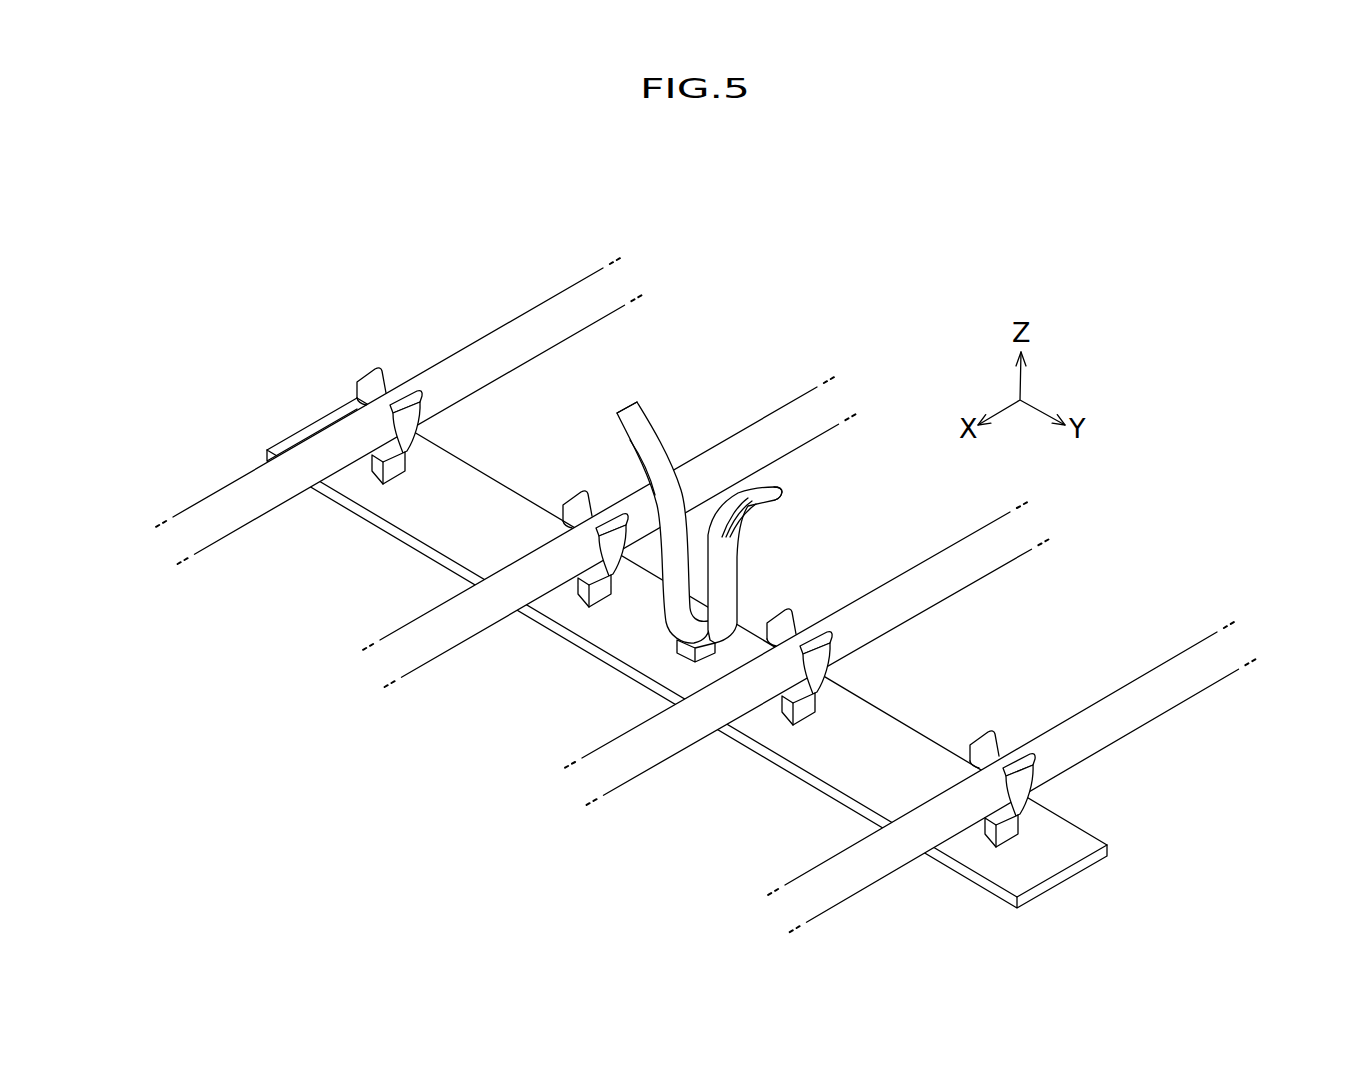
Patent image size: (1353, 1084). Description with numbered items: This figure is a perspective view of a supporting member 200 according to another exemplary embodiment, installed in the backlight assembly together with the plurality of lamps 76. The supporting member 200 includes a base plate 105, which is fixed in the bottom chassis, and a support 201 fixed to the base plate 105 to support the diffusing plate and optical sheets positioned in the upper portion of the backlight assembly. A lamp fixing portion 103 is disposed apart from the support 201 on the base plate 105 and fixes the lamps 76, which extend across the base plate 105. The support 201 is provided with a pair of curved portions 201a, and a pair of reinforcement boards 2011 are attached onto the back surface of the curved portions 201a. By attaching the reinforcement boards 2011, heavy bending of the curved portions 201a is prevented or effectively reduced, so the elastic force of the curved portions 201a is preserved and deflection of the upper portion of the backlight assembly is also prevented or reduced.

The lamp 76 is at (1173, 704).
The lamp fixing portion 103 is at (992, 827).
The base plate 105 is at (1063, 843).
The supporting member 200 is at (725, 502).
The support 201 is at (710, 502).
The curved portion 201a is at (637, 418).
The reinforcement board 2011 is at (637, 468).